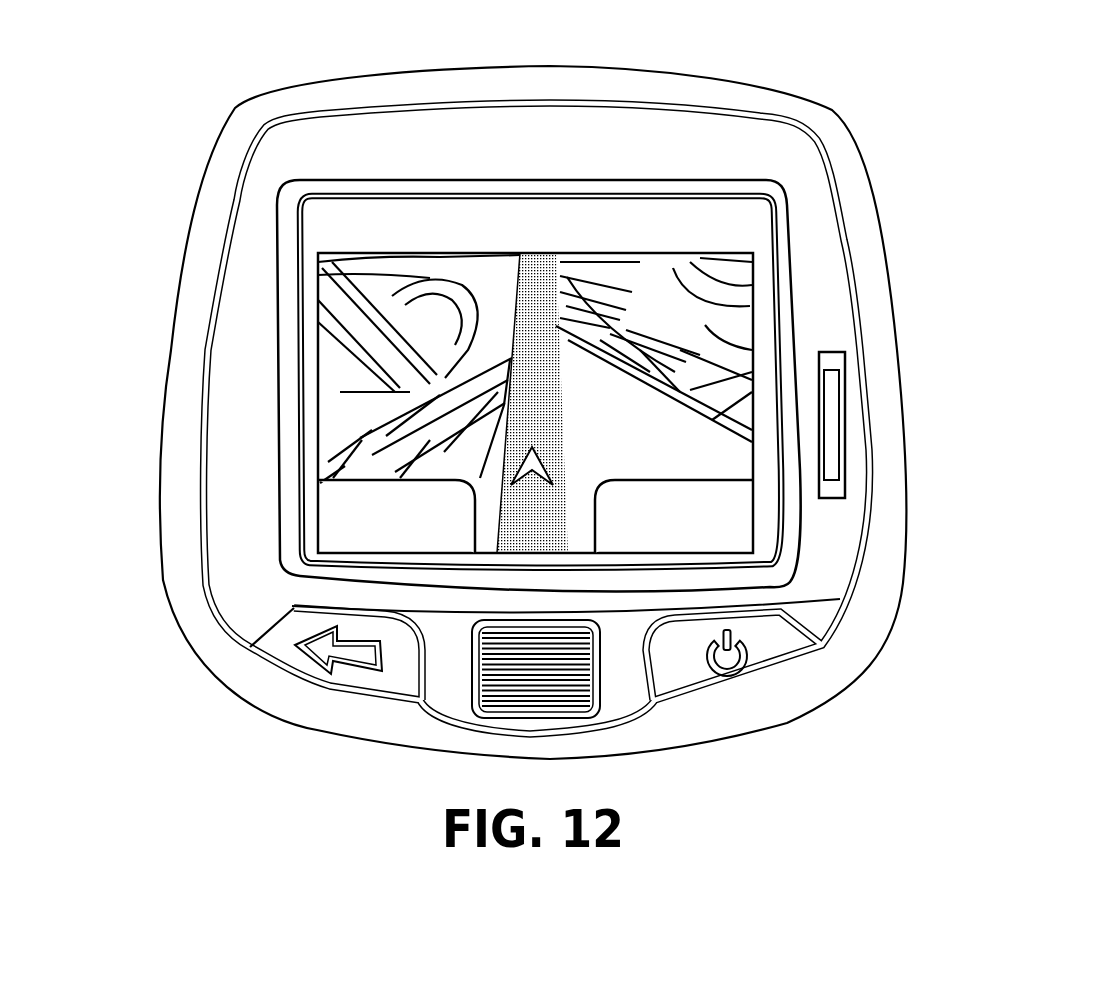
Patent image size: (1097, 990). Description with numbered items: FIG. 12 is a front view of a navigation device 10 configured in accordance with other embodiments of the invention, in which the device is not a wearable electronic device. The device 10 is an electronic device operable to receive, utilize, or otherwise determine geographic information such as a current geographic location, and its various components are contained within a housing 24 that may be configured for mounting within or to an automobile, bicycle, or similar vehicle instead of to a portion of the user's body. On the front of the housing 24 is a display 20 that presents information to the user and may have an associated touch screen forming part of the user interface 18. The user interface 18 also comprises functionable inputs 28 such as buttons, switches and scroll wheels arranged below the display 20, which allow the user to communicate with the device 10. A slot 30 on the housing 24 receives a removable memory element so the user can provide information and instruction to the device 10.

The navigation device 10 is at (180, 108).
The user interface 18 is at (238, 730).
The display 20 is at (317, 437).
The housing 24 is at (803, 190).
The functionable inputs 28 is at (672, 675).
The slot 30 is at (838, 487).